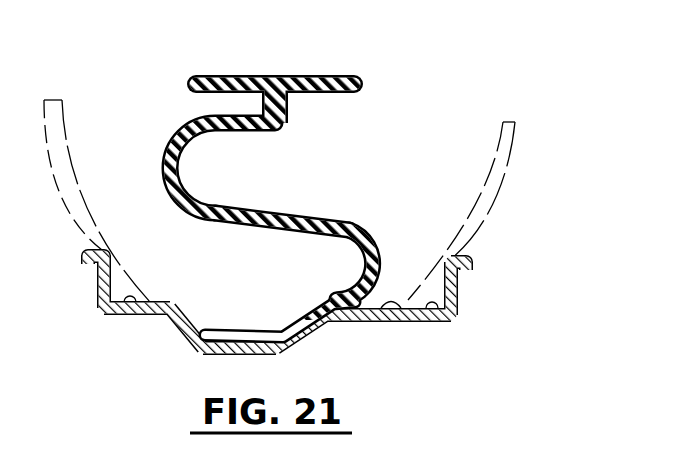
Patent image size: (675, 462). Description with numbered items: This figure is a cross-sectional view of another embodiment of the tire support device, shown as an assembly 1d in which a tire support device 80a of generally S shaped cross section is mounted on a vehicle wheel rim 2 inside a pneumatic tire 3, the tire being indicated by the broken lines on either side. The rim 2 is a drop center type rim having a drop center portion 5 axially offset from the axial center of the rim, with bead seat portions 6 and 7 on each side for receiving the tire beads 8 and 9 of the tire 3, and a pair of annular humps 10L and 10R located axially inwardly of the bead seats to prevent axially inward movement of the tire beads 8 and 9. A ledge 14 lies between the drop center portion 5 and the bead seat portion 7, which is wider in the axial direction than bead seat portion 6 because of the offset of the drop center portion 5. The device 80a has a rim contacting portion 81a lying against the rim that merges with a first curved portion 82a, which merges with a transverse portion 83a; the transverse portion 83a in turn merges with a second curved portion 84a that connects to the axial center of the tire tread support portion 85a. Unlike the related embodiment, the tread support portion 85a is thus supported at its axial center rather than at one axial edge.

The vehicle wheel rim 2 is at (273, 310).
The pneumatic tire 3 is at (507, 153).
The drop center portion 5 is at (215, 352).
The bead seat portion 6 is at (123, 312).
The bead seat portion 7 is at (441, 320).
The tire bead 8 is at (125, 286).
The tire bead 9 is at (432, 291).
The annular hump 10L is at (180, 302).
The annular hump 10R is at (388, 310).
The ledge 14 is at (331, 314).
The inclined wall of tray 1d is at (170, 332).
The tire support device 80a is at (273, 182).
The rim contacting portion 81a is at (292, 316).
The first curved portion 82a is at (396, 262).
The transverse portion 83a is at (310, 212).
The second curved portion 84a is at (166, 150).
The tire tread support portion 85a is at (338, 76).